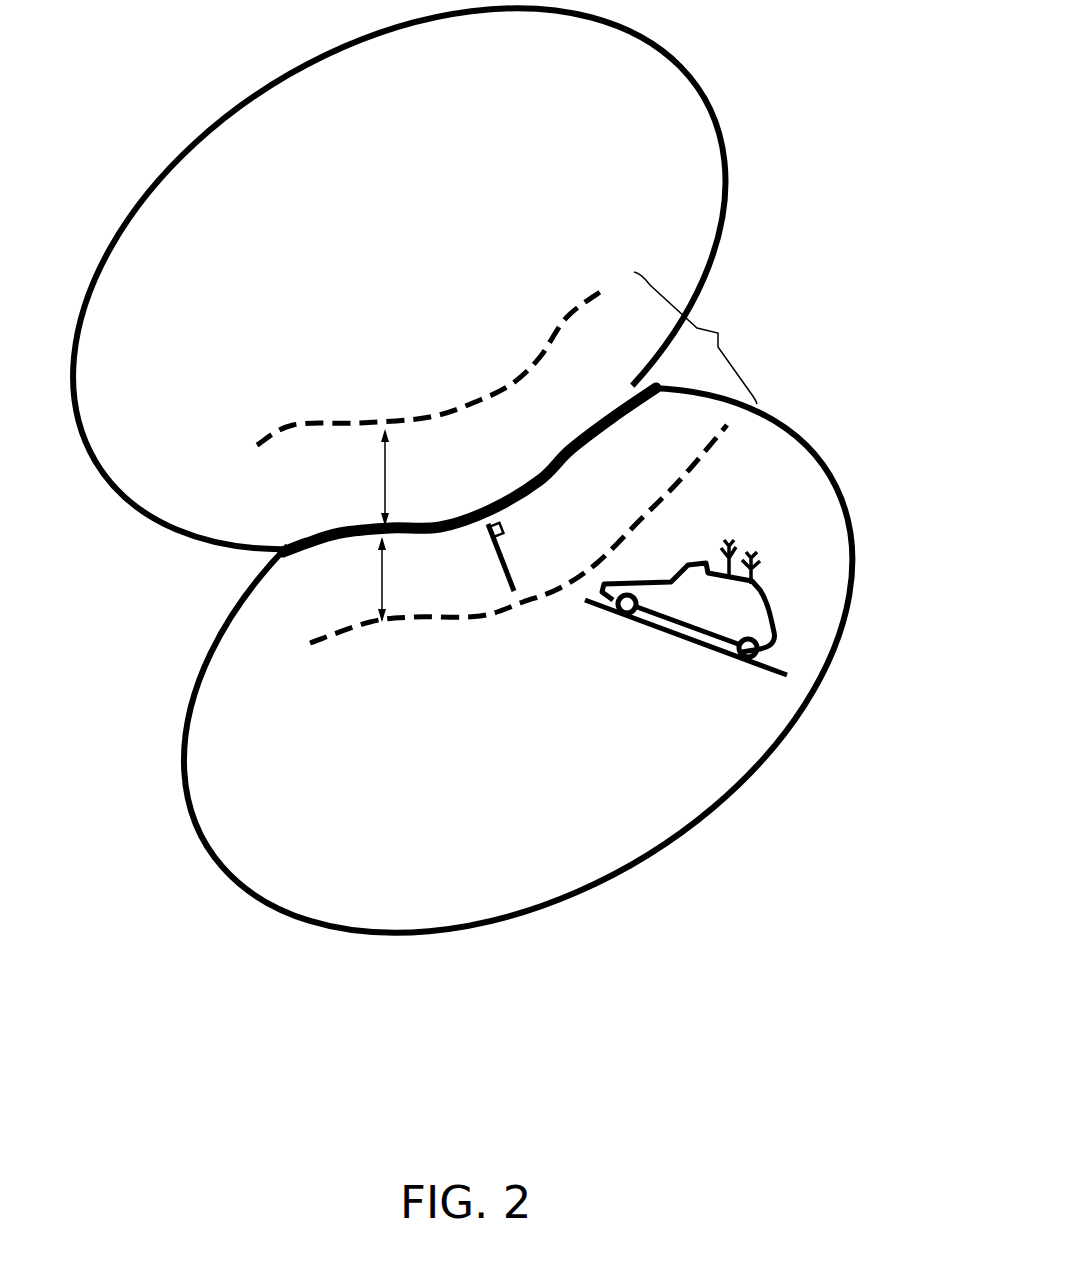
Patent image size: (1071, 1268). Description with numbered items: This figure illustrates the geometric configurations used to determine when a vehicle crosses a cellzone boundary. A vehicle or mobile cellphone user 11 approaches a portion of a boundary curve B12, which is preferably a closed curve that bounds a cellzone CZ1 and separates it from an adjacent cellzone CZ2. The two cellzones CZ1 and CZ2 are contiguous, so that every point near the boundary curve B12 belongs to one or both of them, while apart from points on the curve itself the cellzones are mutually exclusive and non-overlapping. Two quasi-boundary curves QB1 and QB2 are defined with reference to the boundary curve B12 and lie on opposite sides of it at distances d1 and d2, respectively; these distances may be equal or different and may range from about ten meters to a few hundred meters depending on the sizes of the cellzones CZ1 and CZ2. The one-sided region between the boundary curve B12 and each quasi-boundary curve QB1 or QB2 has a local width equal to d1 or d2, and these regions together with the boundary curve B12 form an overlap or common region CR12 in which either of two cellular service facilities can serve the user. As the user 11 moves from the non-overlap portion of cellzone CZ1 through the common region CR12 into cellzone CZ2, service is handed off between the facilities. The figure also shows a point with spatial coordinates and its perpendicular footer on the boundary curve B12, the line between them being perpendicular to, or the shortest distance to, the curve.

The cellzone CZ2 is at (657, 148).
The cellzone CZ1 is at (632, 787).
The boundary curve B12 is at (607, 423).
The overlap or common region CR12 is at (712, 338).
The quasi-boundary curve QB2 is at (295, 423).
The quasi-boundary curve QB1 is at (343, 630).
The distance d2 is at (387, 477).
The distance d1 is at (382, 579).
The vehicle or mobile cellphone user 11 is at (725, 608).